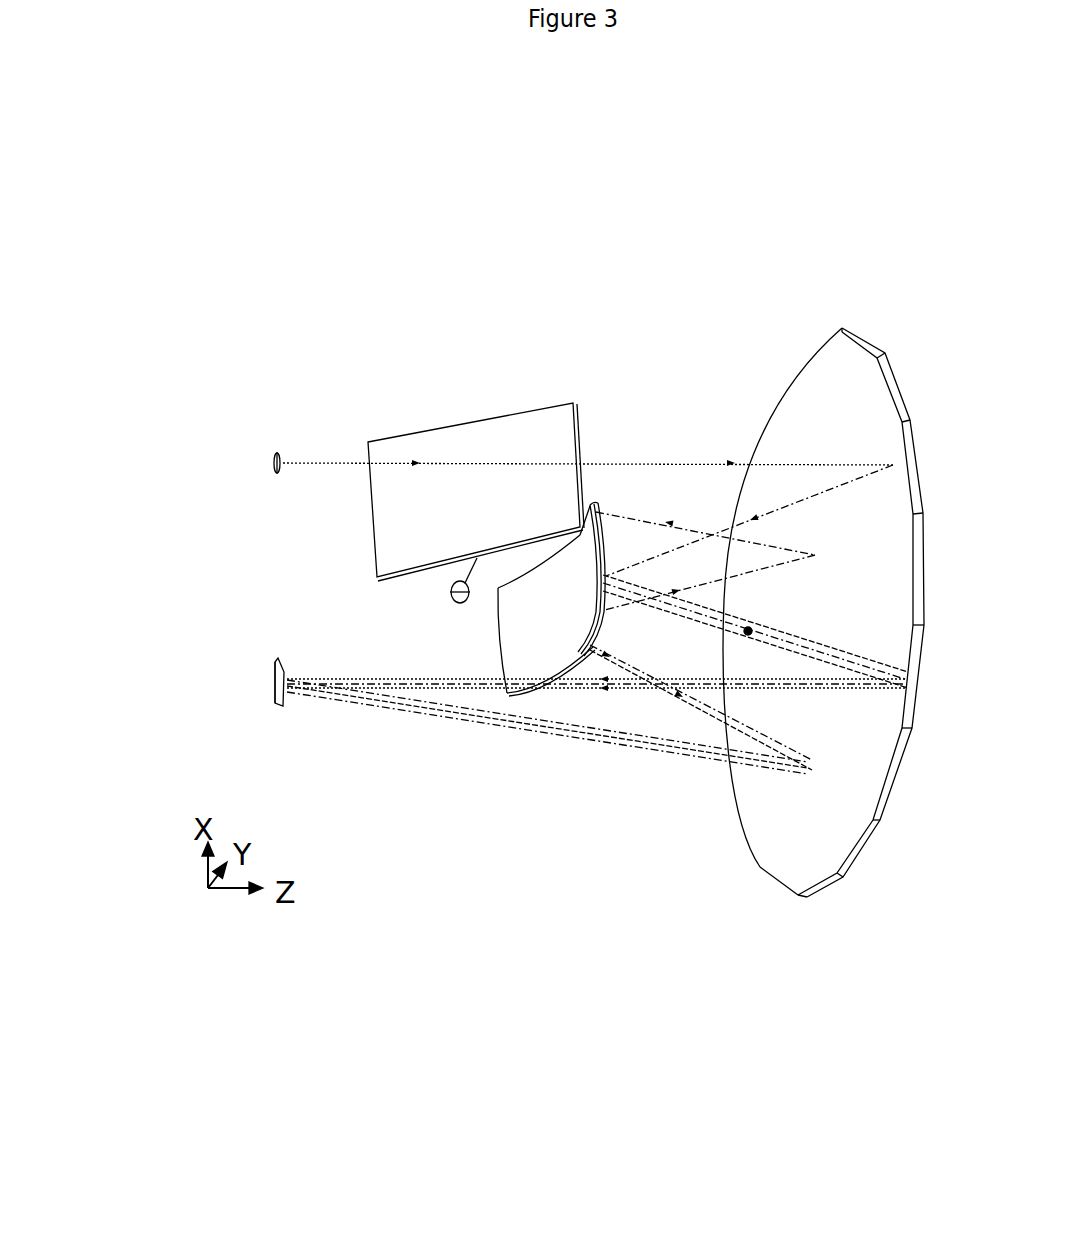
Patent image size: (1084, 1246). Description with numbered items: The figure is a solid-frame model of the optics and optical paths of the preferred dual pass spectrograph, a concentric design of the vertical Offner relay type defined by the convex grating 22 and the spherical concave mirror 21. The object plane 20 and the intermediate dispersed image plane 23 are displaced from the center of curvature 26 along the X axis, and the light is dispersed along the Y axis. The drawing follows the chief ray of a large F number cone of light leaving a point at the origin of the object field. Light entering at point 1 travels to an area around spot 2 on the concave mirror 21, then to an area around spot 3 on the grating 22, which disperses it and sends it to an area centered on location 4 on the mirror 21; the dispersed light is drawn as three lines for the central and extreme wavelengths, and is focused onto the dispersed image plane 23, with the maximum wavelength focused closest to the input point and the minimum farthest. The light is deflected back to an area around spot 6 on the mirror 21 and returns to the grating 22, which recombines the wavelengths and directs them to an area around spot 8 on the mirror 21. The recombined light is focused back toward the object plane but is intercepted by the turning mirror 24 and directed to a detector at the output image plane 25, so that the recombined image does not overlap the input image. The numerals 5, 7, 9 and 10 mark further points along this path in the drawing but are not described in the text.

The point 1 is at (288, 480).
The spot 2 is at (751, 502).
The spot 3 is at (539, 563).
The location 4 is at (597, 633).
The dispersed image point 5 is at (296, 673).
The spot 6 is at (561, 712).
The second incidence region on grating 7 is at (551, 650).
The spot 8 is at (716, 561).
The turning mirror reflection point 9 is at (588, 486).
The output image point 10 is at (441, 586).
The object plane 20 is at (246, 429).
The concave mirror 21 is at (783, 860).
The grating 22 is at (570, 660).
The dispersed image plane 23 is at (242, 700).
The turning mirror 24 is at (483, 405).
The output image plane 25 is at (444, 629).
The center of curvature 26 is at (262, 577).